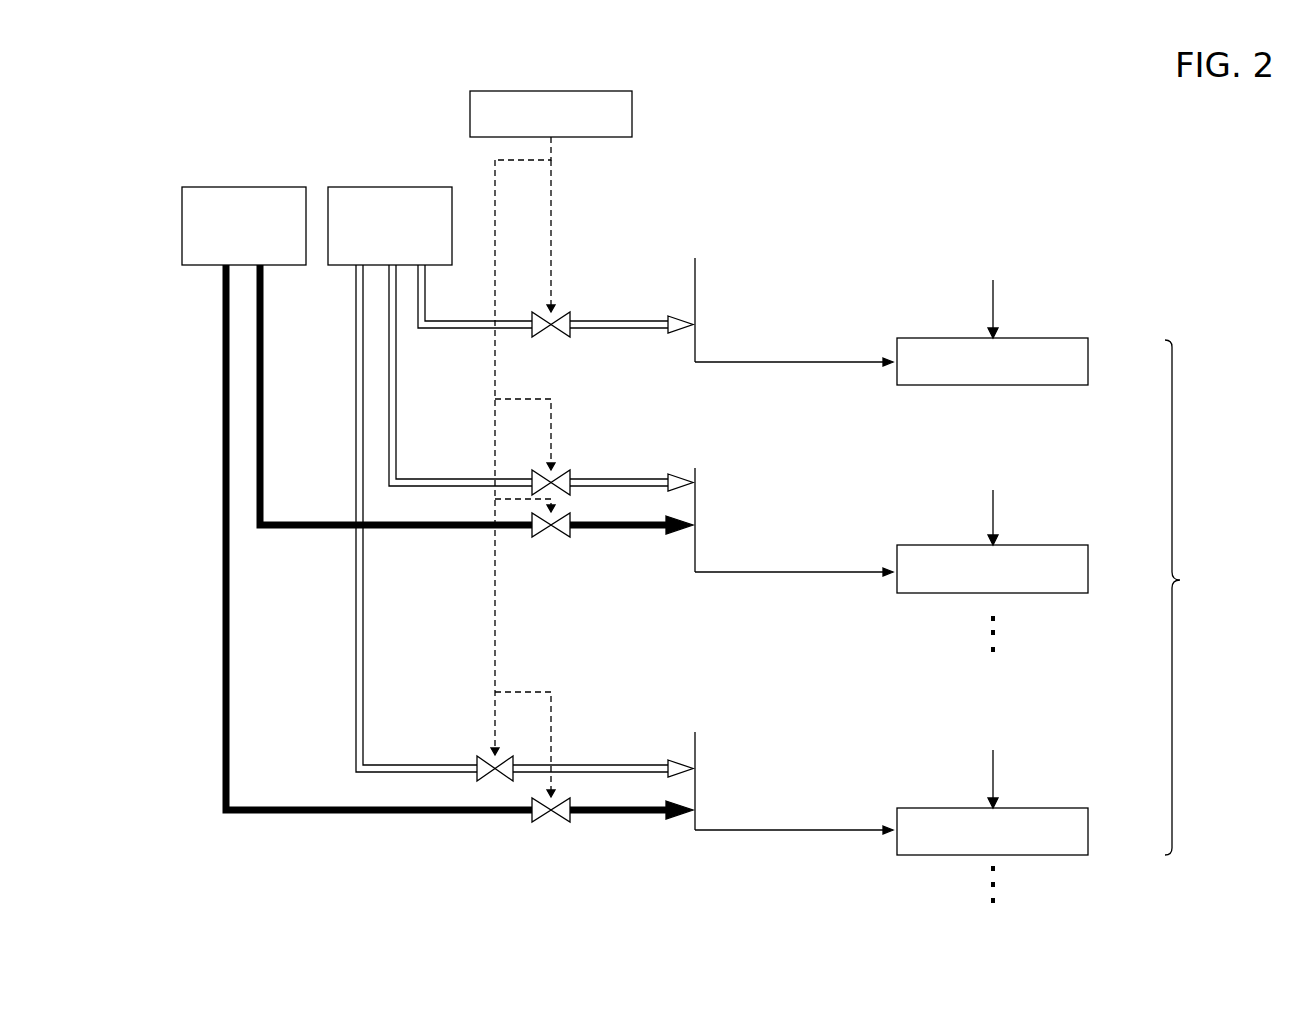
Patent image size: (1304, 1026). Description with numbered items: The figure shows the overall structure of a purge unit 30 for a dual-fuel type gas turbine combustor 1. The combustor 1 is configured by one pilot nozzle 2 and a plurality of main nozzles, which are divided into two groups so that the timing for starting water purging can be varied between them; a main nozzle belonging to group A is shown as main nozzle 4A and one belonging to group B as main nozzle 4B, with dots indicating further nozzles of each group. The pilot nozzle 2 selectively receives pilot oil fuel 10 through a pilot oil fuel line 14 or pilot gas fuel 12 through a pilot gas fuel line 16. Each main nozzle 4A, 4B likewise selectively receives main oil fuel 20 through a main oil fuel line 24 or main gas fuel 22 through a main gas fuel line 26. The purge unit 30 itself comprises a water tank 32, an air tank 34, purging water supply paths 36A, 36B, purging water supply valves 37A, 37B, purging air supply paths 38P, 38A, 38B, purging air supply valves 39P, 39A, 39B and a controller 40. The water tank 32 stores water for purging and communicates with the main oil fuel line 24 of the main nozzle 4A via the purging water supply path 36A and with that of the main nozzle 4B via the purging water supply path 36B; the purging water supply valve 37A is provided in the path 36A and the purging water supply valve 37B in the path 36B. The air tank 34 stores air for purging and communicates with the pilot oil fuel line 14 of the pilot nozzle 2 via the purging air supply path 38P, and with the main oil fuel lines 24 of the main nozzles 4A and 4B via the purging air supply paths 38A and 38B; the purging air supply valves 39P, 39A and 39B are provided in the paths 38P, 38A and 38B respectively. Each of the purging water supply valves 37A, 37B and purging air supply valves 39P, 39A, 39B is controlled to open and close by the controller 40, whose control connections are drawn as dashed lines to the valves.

The gas turbine combustor 1 is at (1184, 597).
The pilot nozzle 2 is at (1088, 358).
The main nozzle 4A is at (1088, 568).
The main nozzle 4B is at (1088, 833).
The pilot oil fuel 10 is at (780, 296).
The pilot gas fuel 12 is at (1073, 261).
The pilot oil fuel line 14 is at (774, 360).
The pilot gas fuel line 16 is at (998, 289).
The main oil fuel 20 is at (759, 625).
The main gas fuel 22 is at (1036, 607).
The main oil fuel line 24 is at (774, 570).
The main gas fuel line 26 is at (998, 510).
The purge unit 30 is at (792, 157).
The water tank 32 is at (257, 187).
The air tank 34 is at (419, 187).
The purging water supply path 36A is at (628, 535).
The purging water supply path 36B is at (628, 820).
The purging water supply valve 37A is at (562, 537).
The purging water supply valve 37B is at (562, 822).
The purging air supply path 38P is at (636, 331).
The purging air supply path 38A is at (628, 478).
The purging air supply path 38B is at (628, 765).
The purging air supply valve 39P is at (562, 316).
The purging air supply valve 39A is at (566, 474).
The purging air supply valve 39B is at (484, 755).
The controller 40 is at (632, 113).